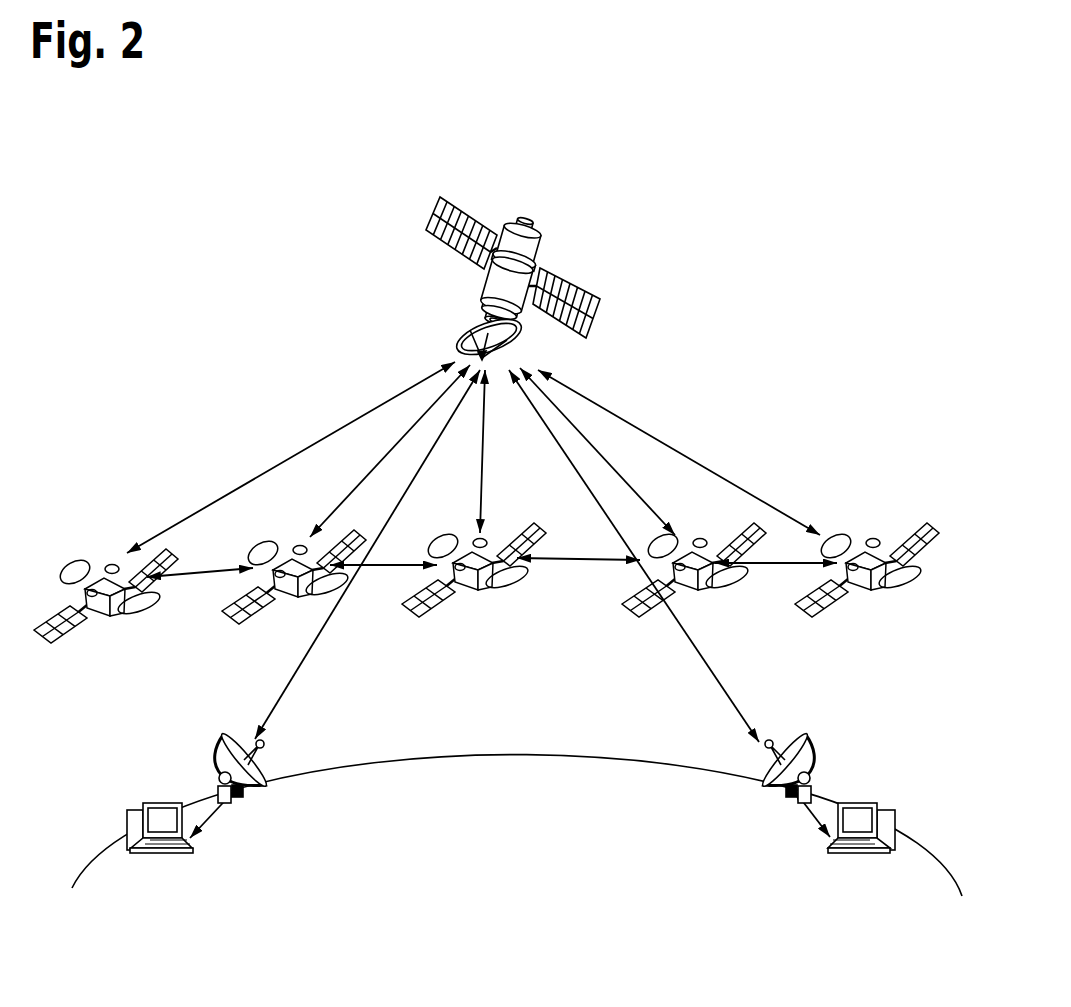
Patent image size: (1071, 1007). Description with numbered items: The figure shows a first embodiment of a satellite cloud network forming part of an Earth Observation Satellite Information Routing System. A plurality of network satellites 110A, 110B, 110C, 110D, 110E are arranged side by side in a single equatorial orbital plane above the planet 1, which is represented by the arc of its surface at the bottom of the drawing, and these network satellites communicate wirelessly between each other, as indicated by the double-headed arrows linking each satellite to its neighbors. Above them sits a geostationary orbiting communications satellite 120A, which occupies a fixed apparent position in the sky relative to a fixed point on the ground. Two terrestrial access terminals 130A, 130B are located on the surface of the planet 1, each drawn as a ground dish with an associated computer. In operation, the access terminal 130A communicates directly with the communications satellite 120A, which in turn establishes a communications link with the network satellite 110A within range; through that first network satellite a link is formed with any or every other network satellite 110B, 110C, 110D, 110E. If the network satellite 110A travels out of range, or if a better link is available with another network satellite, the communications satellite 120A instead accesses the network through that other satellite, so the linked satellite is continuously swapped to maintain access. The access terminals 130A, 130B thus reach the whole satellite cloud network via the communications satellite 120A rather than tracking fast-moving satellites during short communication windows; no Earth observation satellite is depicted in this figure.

The planet 1 is at (509, 871).
The geostationary orbiting communications satellite 120A is at (490, 288).
The network satellite 110A is at (96, 600).
The network satellite 110B is at (282, 584).
The network satellite 110C is at (462, 577).
The network satellite 110D is at (682, 577).
The network satellite 110E is at (855, 577).
The access terminal 130A is at (165, 803).
The access terminal 130B is at (858, 802).